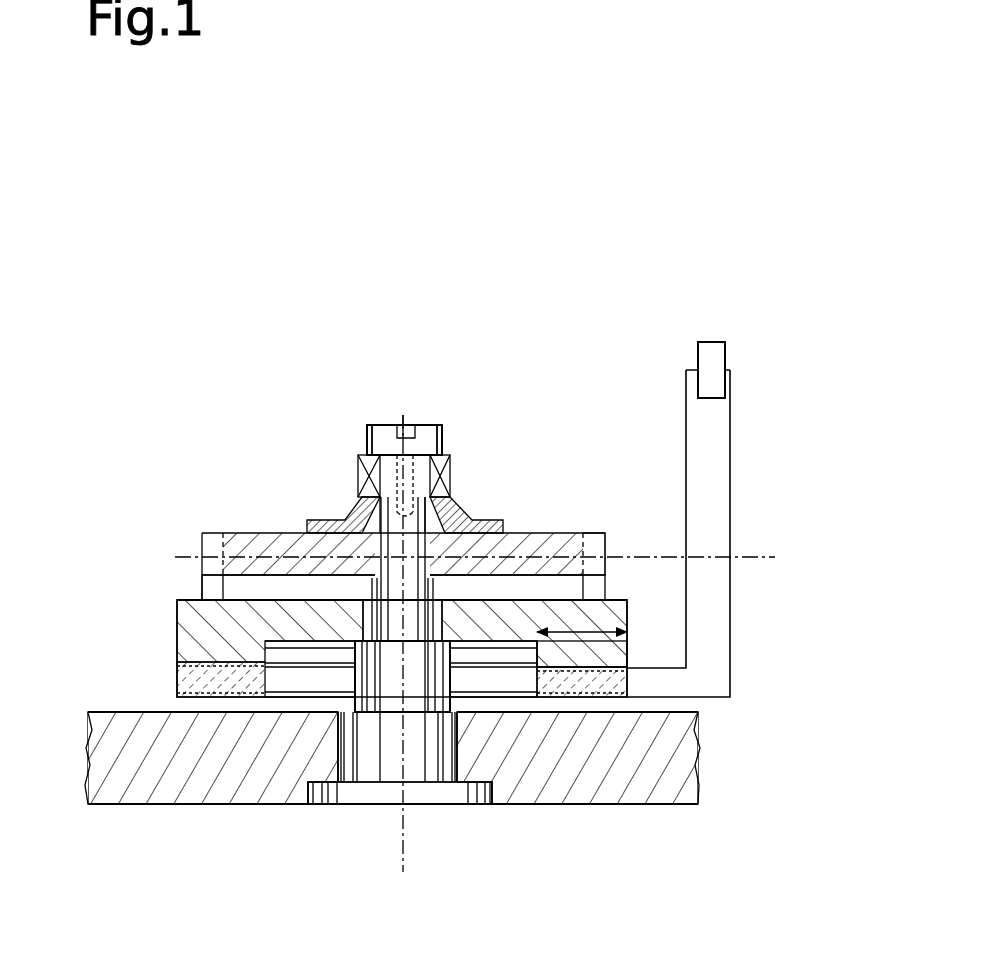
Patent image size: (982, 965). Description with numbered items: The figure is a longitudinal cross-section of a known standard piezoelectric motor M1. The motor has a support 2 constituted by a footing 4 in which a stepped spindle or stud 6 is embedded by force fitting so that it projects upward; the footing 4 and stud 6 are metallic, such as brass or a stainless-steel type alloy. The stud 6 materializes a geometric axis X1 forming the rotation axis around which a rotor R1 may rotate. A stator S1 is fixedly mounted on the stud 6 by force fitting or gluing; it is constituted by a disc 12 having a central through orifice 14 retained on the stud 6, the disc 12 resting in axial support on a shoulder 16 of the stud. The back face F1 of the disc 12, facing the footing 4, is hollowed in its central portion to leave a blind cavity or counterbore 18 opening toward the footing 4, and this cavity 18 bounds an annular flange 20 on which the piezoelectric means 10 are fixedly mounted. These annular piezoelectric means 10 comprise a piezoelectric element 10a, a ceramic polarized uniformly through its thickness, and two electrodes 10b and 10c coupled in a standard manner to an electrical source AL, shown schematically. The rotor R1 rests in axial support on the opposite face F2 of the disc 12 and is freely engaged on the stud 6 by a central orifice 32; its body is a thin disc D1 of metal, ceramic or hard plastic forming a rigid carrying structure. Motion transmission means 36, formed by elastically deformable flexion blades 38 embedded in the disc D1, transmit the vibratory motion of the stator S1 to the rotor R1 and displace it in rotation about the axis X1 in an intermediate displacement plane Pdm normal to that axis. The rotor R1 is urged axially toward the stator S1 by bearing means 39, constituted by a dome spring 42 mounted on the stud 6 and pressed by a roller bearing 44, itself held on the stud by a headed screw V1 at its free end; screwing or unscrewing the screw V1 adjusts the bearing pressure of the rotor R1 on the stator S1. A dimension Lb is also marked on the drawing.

The support 2 is at (688, 822).
The footing 4 is at (615, 775).
The stepped spindle or stud 6 is at (372, 757).
The piezoelectric means 10 is at (642, 682).
The piezoelectric element 10a is at (177, 677).
The electrode 10b is at (177, 655).
The electrode 10c is at (350, 699).
The disc 12 is at (585, 622).
The through orifice 14 is at (470, 590).
The shoulder 16 is at (345, 630).
The blind cavity or counterbore 18 is at (493, 653).
The annular flange 20 is at (588, 647).
The central orifice 32 is at (430, 598).
The motion transmission means 36 is at (188, 590).
The flexion blades 38 is at (605, 592).
The bearing means 39 is at (468, 412).
The dome spring 42 is at (340, 520).
The roller bearing 44 is at (356, 514).
The electrical source AL is at (710, 358).
The disc D1 is at (275, 548).
The back face F1 is at (524, 710).
The face F2 is at (192, 588).
The width dimension Lb is at (666, 616).
The piezoelectric motor M1 is at (616, 315).
The intermediate displacement plane Pdm is at (848, 541).
The rotor R1 is at (578, 500).
The stator S1 is at (160, 620).
The headed screw V1 is at (412, 423).
The geometric axis X1 is at (403, 845).